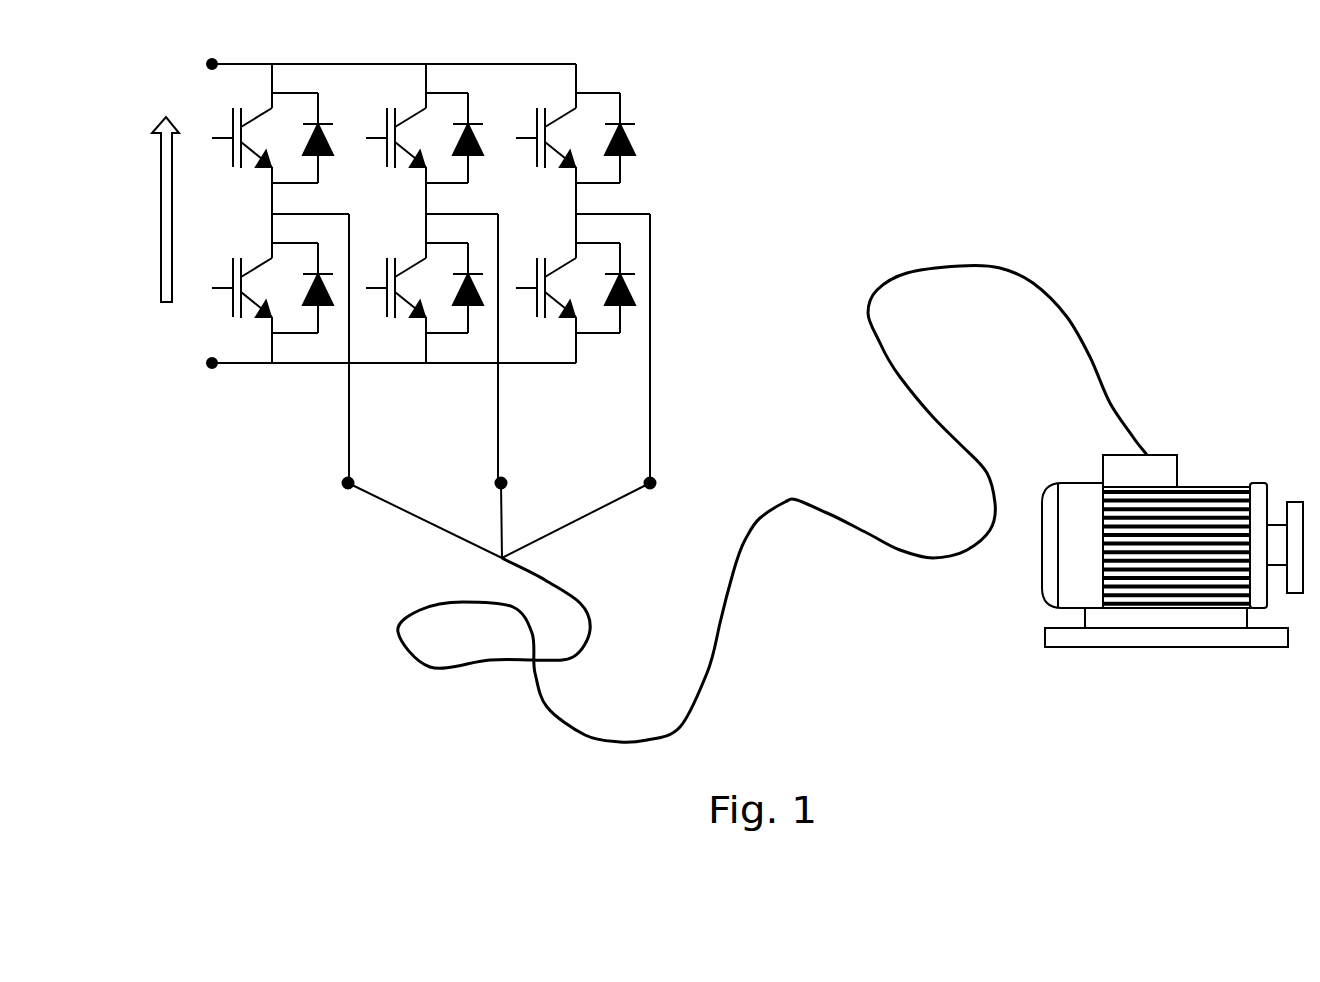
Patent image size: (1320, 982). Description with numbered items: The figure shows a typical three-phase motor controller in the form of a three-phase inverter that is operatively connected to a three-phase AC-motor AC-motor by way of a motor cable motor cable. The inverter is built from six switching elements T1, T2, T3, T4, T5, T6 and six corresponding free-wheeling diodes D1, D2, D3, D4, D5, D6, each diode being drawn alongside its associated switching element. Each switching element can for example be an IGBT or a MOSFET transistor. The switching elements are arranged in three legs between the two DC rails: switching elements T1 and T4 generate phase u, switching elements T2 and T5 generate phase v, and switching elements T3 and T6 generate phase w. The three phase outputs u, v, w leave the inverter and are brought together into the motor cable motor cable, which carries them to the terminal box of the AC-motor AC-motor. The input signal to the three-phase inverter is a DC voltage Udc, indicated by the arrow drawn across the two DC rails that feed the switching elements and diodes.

The switching element T1 is at (242, 116).
The switching element T2 is at (396, 116).
The switching element T3 is at (546, 116).
The switching element T4 is at (242, 268).
The switching element T5 is at (396, 268).
The switching element T6 is at (546, 267).
The free-wheeling diode D1 is at (319, 123).
The free-wheeling diode D2 is at (470, 123).
The free-wheeling diode D3 is at (620, 122).
The free-wheeling diode D4 is at (321, 276).
The free-wheeling diode D5 is at (470, 276).
The free-wheeling diode D6 is at (622, 275).
The DC voltage Udc is at (140, 209).
The phase u is at (340, 355).
The phase v is at (492, 355).
The phase w is at (638, 352).
The element motor cable is at (772, 488).
The element AC-motor is at (1172, 568).